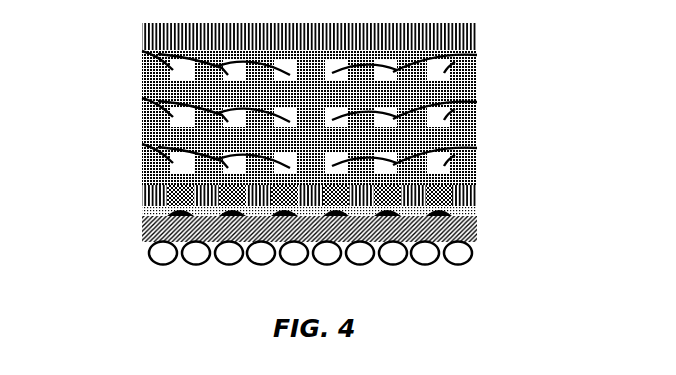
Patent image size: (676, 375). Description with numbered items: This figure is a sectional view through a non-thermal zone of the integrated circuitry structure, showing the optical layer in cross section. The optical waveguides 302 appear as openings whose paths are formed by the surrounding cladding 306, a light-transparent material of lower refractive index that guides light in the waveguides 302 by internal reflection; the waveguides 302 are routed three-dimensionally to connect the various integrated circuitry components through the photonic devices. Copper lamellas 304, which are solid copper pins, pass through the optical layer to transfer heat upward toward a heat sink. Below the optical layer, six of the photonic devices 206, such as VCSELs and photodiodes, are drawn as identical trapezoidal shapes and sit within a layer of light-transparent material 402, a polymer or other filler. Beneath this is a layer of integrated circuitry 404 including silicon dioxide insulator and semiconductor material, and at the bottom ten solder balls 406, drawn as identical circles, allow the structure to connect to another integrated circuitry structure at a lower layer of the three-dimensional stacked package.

The first set of optical transmitters and receivers 206 is at (141, 220).
The optical waveguides 302 is at (142, 51).
The copper lamellas 304 is at (468, 34).
The cladding 306 is at (473, 121).
The light-transparent material 402 is at (477, 213).
The layer of integrated circuitry 404 is at (141, 233).
The solder balls 406 is at (163, 265).